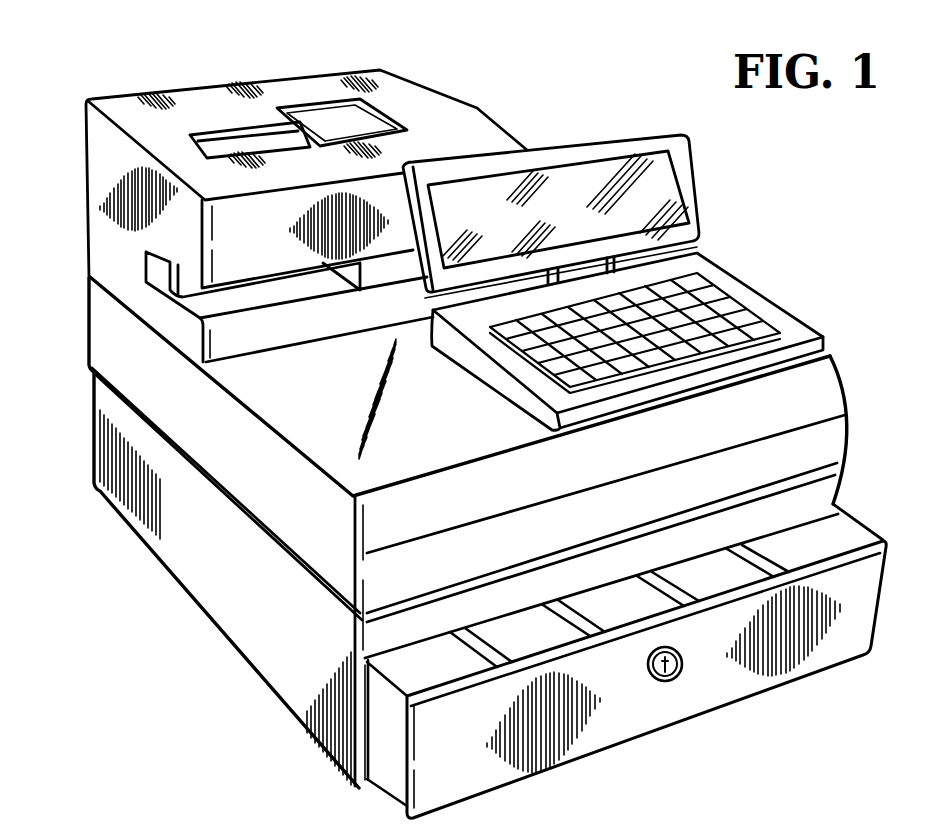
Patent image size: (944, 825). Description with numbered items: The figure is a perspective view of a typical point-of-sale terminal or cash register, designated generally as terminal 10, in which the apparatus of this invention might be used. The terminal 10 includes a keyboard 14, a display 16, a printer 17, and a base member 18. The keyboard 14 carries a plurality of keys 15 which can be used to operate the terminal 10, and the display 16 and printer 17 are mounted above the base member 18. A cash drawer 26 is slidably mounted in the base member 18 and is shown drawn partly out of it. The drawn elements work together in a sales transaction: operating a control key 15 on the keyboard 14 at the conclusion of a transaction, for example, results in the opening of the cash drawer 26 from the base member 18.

The terminal 10 is at (152, 62).
The keyboard 14 is at (798, 322).
The keys 15 is at (732, 310).
The display 16 is at (669, 181).
The printer 17 is at (207, 183).
The base member 18 is at (240, 614).
The cash drawer 26 is at (637, 730).